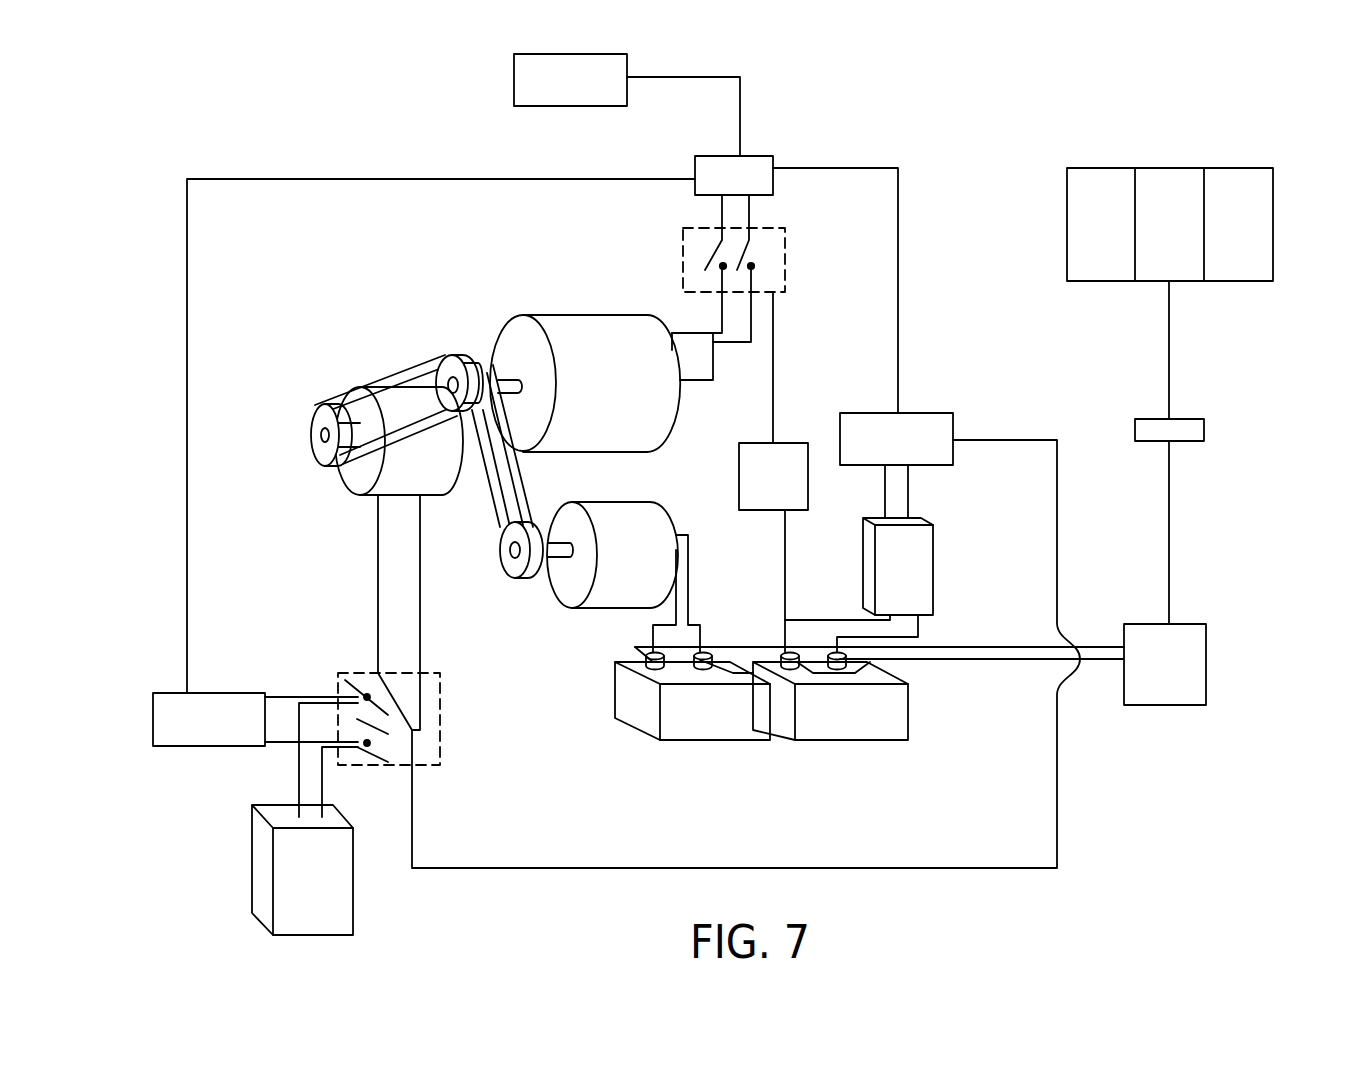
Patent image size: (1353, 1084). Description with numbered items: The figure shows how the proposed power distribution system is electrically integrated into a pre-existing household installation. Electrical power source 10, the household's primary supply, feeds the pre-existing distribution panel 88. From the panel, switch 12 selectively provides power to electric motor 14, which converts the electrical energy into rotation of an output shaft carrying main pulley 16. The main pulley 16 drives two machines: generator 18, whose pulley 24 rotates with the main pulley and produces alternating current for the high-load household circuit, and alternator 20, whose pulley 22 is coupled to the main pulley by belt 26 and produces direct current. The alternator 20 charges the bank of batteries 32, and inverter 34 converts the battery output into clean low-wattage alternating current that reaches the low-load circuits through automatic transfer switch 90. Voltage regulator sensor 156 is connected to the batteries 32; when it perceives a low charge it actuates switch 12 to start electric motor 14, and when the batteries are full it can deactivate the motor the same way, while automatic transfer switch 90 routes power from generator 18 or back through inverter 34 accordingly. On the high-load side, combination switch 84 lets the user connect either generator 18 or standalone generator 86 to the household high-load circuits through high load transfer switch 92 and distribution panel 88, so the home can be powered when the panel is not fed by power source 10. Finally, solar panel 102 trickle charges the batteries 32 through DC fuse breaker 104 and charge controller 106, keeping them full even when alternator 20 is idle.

The electrical power source 10 is at (537, 88).
The distribution panel 88 is at (738, 168).
The switch 12 is at (773, 270).
The electric motor 14 is at (617, 332).
The main pulley 16 is at (466, 358).
The generator 18 is at (364, 392).
The pulley 24 is at (318, 430).
The belt 26 is at (513, 490).
The pulley 22 is at (523, 570).
The alternator 20 is at (580, 610).
The voltage regulator sensor 156 is at (763, 465).
The automatic transfer switch 90 is at (950, 427).
The inverter 34 is at (920, 555).
The bank of batteries 32 is at (835, 717).
The switch 84 is at (423, 752).
The standalone generator 86 is at (265, 847).
The high load transfer switch 92 is at (180, 719).
The solar panel 102 is at (1235, 283).
The DC fuse breaker 104 is at (1195, 440).
The charge controller 106 is at (1195, 704).